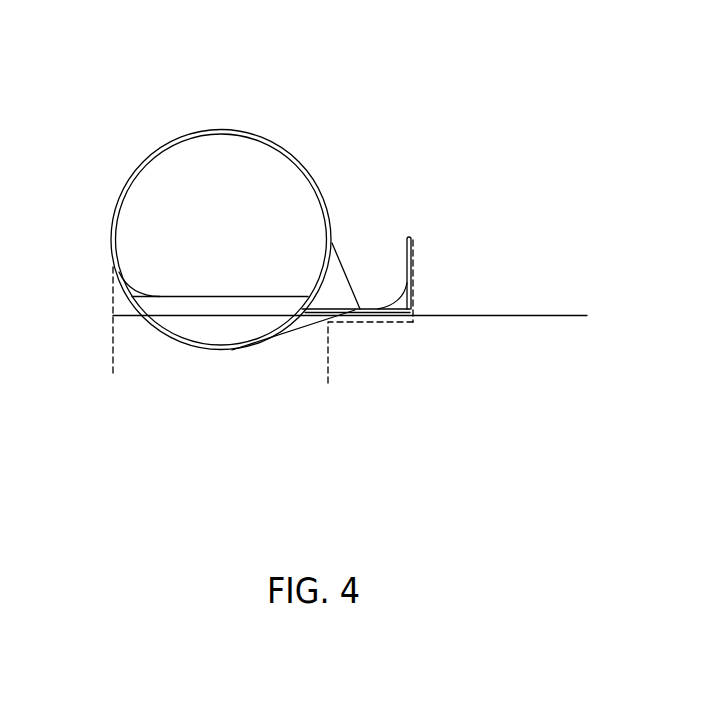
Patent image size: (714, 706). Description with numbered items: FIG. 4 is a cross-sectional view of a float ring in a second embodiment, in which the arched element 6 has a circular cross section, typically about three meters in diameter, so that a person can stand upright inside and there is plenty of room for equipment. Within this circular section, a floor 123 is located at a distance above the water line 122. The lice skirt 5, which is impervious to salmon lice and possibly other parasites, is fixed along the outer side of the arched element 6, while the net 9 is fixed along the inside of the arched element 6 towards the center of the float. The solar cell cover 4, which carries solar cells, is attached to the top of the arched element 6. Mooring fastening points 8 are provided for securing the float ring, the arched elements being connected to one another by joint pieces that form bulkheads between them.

The solar cell cover 4 is at (227, 130).
The arched element 6 is at (118, 200).
The floor 123 is at (113, 253).
The lice skirt 5 is at (113, 350).
The water line 122 is at (550, 315).
The mooring fastening points 8 is at (412, 280).
The net 9 is at (328, 370).